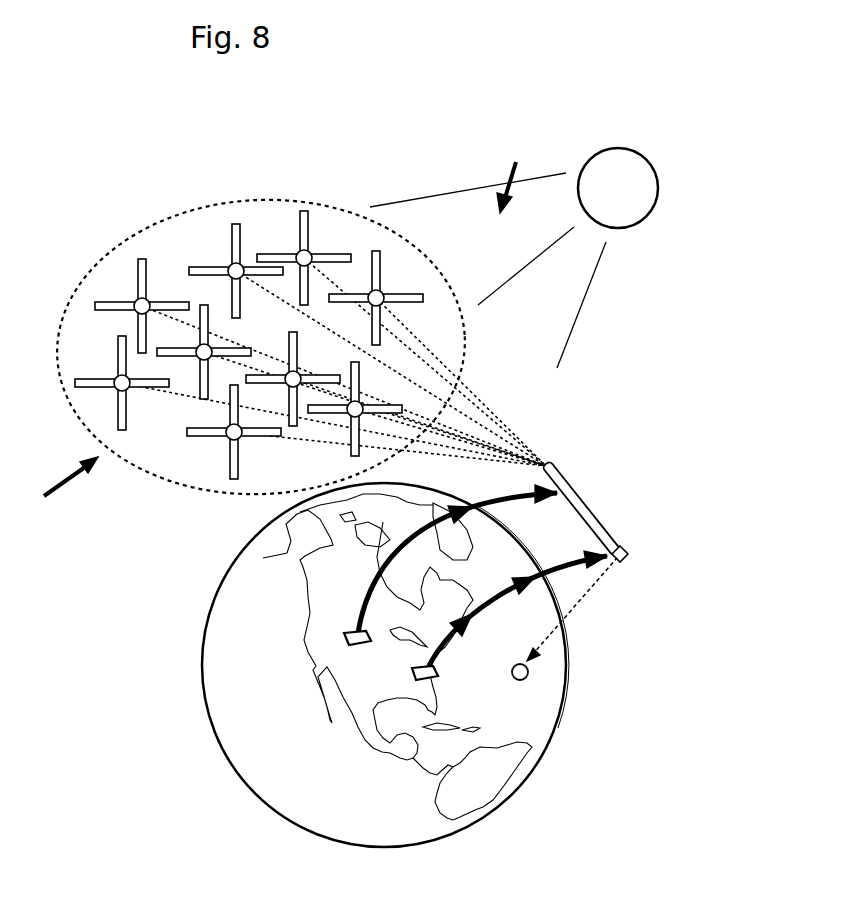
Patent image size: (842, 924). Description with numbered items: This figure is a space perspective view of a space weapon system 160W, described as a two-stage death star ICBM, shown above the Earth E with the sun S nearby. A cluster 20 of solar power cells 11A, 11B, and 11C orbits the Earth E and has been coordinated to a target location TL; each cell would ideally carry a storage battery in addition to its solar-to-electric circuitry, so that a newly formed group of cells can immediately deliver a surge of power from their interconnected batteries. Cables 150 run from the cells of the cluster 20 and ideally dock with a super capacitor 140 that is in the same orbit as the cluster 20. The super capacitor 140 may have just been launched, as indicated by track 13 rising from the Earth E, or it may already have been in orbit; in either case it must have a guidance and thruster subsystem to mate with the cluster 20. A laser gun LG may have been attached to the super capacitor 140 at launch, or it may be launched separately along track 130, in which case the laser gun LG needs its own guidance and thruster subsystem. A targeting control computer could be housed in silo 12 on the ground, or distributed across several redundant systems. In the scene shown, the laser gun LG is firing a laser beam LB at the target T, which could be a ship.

The cluster of solar power cells 20 is at (82, 277).
The solar power cell 11A is at (232, 237).
The solar power cell 11B is at (283, 249).
The solar power cell 11C is at (373, 250).
The cables 150 is at (527, 452).
The target location TL is at (62, 479).
The sun S is at (645, 192).
The space weapon system 160W is at (526, 176).
The earth E is at (257, 735).
The track 13 is at (503, 500).
The silo 12 is at (345, 636).
The track 130 is at (452, 650).
The super capacitor 140 is at (580, 497).
The laser gun LG is at (628, 552).
The laser beam LB is at (582, 602).
The target T is at (529, 677).